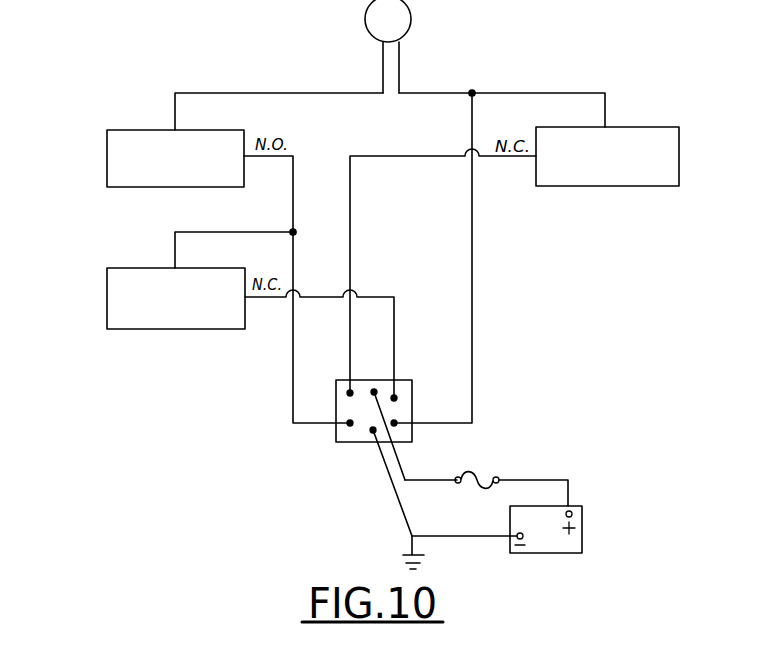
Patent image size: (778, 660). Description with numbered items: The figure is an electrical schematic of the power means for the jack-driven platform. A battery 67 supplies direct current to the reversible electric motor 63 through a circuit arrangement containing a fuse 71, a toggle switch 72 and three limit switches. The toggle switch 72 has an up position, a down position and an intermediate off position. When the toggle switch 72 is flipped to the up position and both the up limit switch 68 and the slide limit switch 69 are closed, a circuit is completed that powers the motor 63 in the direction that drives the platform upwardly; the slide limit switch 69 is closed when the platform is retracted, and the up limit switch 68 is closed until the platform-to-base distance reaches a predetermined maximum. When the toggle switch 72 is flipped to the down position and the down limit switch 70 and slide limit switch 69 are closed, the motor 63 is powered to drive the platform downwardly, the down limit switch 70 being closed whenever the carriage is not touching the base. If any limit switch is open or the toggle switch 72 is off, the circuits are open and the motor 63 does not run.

The reversible electric motor 63 is at (412, 21).
The slide limit switch 69 is at (107, 157).
The down limit switch 70 is at (660, 133).
The up limit switch 68 is at (156, 323).
The toggle switch 72 is at (408, 388).
The fuse 71 is at (483, 477).
The battery 67 is at (585, 525).